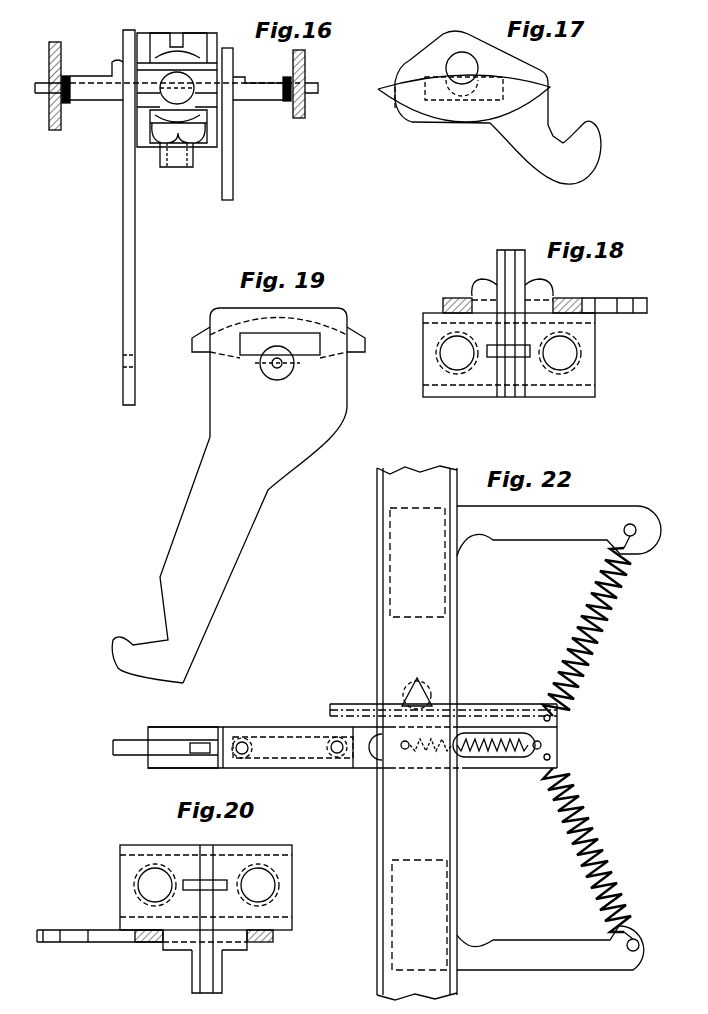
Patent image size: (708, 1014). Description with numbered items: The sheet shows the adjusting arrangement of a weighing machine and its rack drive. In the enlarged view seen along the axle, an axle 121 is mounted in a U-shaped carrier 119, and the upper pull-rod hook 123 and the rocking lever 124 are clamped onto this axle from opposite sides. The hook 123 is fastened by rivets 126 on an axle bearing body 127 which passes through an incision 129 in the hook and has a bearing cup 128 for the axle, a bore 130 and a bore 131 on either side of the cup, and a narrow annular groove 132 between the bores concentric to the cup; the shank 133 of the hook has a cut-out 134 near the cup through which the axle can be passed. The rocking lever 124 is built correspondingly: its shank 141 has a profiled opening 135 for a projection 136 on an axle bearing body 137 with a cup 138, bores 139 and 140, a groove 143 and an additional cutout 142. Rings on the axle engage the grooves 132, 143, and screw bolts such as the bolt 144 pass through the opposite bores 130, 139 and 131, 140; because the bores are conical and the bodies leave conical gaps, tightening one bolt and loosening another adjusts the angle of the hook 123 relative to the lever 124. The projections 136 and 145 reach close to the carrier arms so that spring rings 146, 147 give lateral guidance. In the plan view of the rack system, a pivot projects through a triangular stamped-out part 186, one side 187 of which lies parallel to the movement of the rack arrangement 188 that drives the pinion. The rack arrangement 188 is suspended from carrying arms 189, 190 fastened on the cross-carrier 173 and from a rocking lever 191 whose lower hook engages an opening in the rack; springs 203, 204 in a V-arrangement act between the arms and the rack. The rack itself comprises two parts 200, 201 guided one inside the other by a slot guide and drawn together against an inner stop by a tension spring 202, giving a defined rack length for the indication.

In FIG. 16, the carrier 119 is at (50, 50).
In FIG. 16, the axle 121 is at (117, 93).
In FIG. 16, the upper pull-rod hook 123 is at (228, 173).
In FIG. 17, the upper pull-rod hook 123 is at (560, 163).
In FIG. 18, the upper pull-rod hook 123 is at (602, 307).
In FIG. 16, the rocking lever 124 is at (140, 262).
In FIG. 19, the rocking lever 124 is at (165, 572).
In FIG. 20, the rocking lever 124 is at (107, 943).
In FIG. 18, the rivets 126 is at (490, 290).
In FIG. 18, the axle bearing body 127 is at (494, 373).
In FIG. 17, the bearing cup 128 is at (540, 58).
In FIG. 18, the bearing cup 128 is at (512, 390).
In FIG. 18, the incision 129 is at (550, 297).
In FIG. 18, the bore 130 is at (447, 358).
In FIG. 18, the bore 131 is at (578, 353).
In FIG. 18, the annular groove 132 is at (525, 358).
In FIG. 17, the shank 133 is at (427, 54).
In FIG. 17, the cut-out 134 is at (536, 57).
In FIG. 20, the profiled opening 135 is at (162, 944).
In FIG. 16, the projection 136 is at (85, 75).
In FIG. 20, the projection 136 is at (232, 942).
In FIG. 20, the axle bearing body 137 is at (278, 858).
In FIG. 20, the cup 138 is at (208, 851).
In FIG. 20, the bore 139 is at (147, 890).
In FIG. 20, the bore 140 is at (268, 890).
In FIG. 19, the shank 141 is at (327, 398).
In FIG. 19, the cutout 142 is at (267, 372).
In FIG. 20, the groove 143 is at (198, 880).
In FIG. 16, the screw bolt 144 is at (163, 32).
In FIG. 16, the projection 145 is at (266, 100).
In FIG. 18, the projection 145 is at (472, 299).
In FIG. 16, the spring ring 146 is at (67, 102).
In FIG. 16, the spring ring 147 is at (301, 100).
In FIG. 22, the cross-carrier 173 is at (408, 492).
In FIG. 22, the triangular stamped-out part 186 is at (404, 693).
In FIG. 22, the side 187 is at (432, 700).
In FIG. 22, the rack arrangement 188 is at (333, 767).
In FIG. 22, the carrying arm 189 is at (532, 522).
In FIG. 22, the carrying arm 190 is at (553, 940).
In FIG. 22, the rocking lever 191 is at (124, 743).
In FIG. 22, the rack part 200 is at (228, 733).
In FIG. 22, the rack part 201 is at (520, 768).
In FIG. 22, the spring 202 is at (473, 753).
In FIG. 22, the spring 203 is at (567, 634).
In FIG. 22, the spring 204 is at (585, 806).